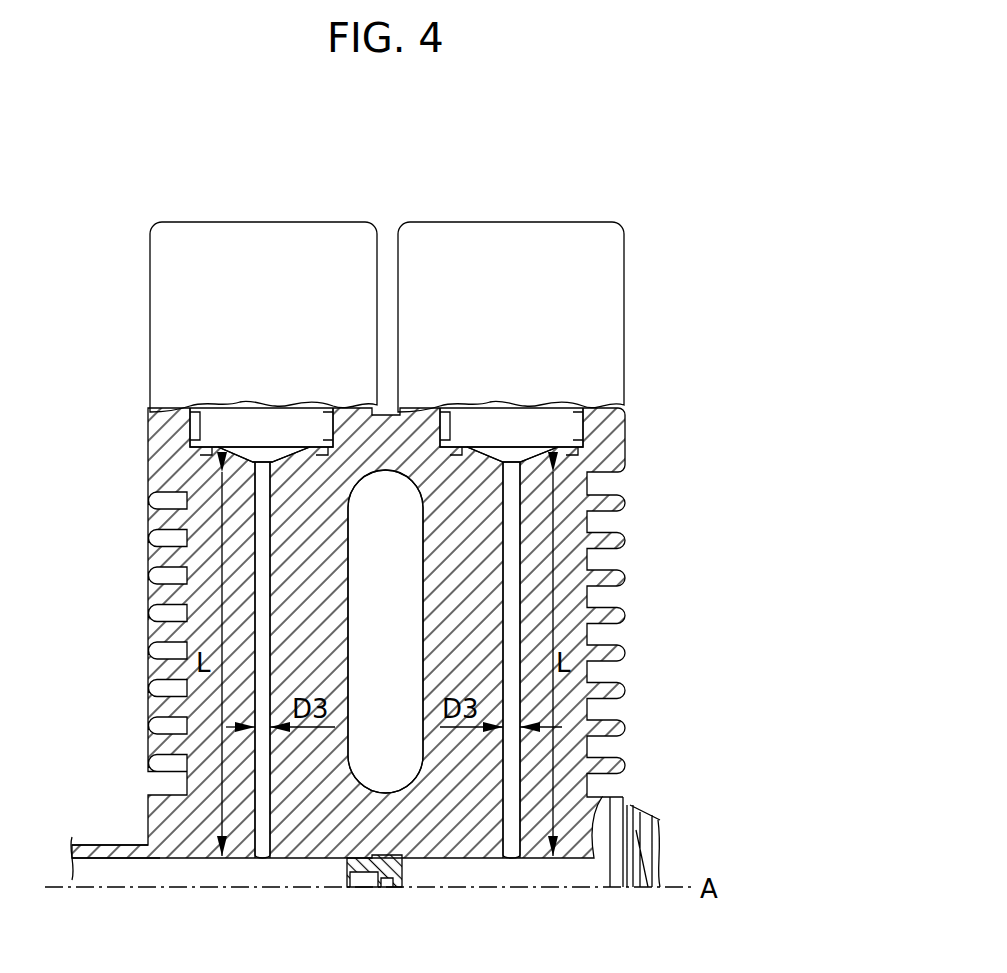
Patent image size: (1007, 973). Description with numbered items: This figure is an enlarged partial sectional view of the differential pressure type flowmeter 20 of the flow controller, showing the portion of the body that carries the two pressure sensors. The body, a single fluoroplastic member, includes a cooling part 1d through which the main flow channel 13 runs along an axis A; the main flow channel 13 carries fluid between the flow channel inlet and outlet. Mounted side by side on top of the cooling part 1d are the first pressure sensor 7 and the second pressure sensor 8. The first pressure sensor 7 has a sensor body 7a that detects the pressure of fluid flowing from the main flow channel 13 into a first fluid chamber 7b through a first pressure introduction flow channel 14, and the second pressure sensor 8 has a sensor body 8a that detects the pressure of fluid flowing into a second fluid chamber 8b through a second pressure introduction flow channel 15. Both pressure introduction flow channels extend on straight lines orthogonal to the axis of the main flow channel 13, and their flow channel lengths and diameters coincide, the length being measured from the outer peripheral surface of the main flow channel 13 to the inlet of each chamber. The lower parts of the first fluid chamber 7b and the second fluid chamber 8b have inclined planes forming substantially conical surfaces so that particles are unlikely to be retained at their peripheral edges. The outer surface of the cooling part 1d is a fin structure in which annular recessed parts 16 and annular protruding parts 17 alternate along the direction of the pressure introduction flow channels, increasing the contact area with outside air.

The cooling part 1d is at (700, 663).
The first pressure sensor 7 is at (506, 248).
The sensor body 7a is at (533, 420).
The first fluid chamber 7b is at (500, 452).
The second pressure sensor 8 is at (249, 248).
The sensor body 8a is at (244, 420).
The second fluid chamber 8b is at (272, 452).
The main flow channel 13 is at (99, 875).
The first pressure introduction flow channel 14 is at (512, 627).
The second pressure introduction flow channel 15 is at (262, 568).
The annular recessed parts 16 is at (165, 481).
The annular protruding parts 17 is at (632, 500).
The differential pressure type flowmeter 20 is at (655, 287).